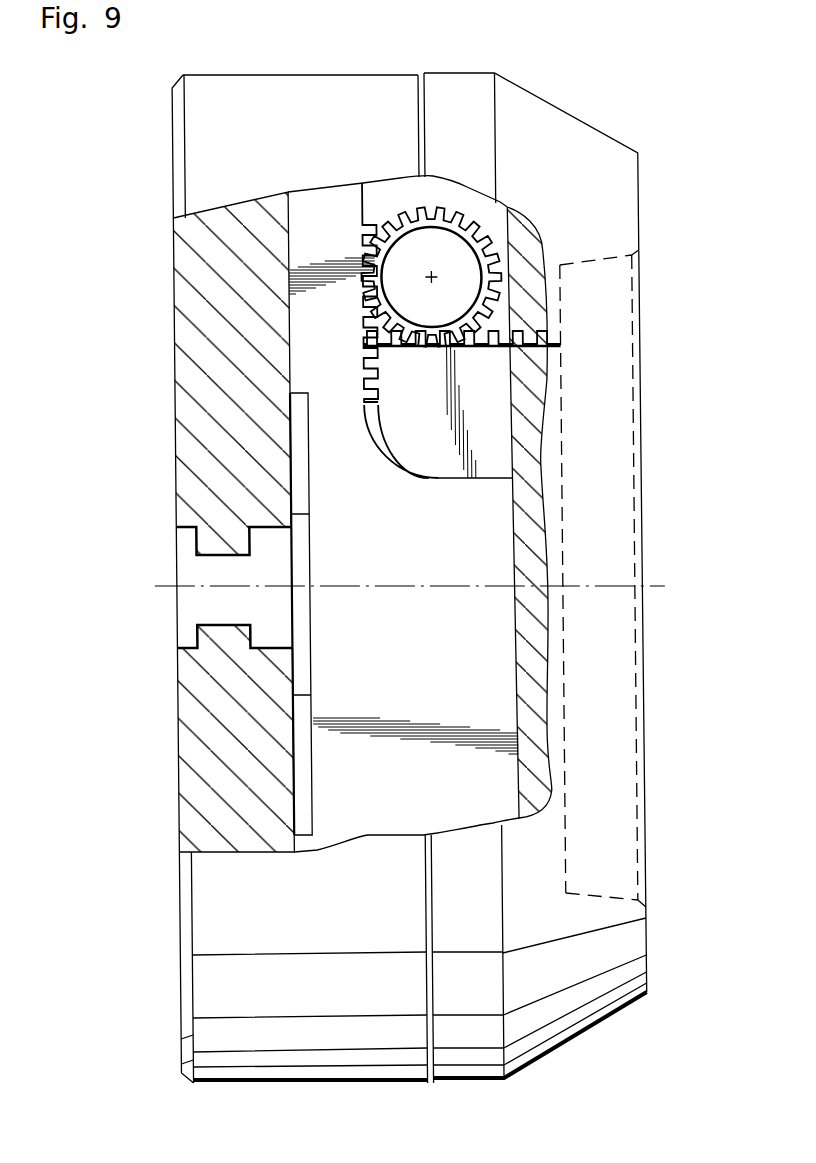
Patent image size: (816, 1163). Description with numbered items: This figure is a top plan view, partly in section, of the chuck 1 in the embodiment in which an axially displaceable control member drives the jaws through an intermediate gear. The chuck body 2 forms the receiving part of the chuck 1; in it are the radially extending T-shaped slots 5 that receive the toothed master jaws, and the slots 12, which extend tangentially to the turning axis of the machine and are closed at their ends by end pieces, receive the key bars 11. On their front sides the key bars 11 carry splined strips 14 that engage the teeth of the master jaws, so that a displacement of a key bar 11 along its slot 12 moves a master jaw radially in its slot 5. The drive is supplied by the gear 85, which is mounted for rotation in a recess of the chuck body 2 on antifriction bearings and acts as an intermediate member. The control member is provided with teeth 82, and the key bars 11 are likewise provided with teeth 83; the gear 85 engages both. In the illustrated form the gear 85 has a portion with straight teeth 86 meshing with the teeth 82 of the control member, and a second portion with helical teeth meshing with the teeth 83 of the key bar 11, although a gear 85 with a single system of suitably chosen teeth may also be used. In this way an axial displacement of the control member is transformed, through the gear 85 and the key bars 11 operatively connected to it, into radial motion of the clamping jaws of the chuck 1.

The chuck 1 is at (146, 1061).
The chuck body 2 is at (272, 700).
The T-shaped slots 5 is at (273, 575).
The key bars 11 is at (481, 686).
The slots 12 is at (293, 310).
The splined strips 14 is at (300, 662).
The teeth 82 is at (489, 347).
The teeth 83 is at (369, 372).
The gear 85 is at (463, 213).
The straight teeth 86 is at (406, 215).